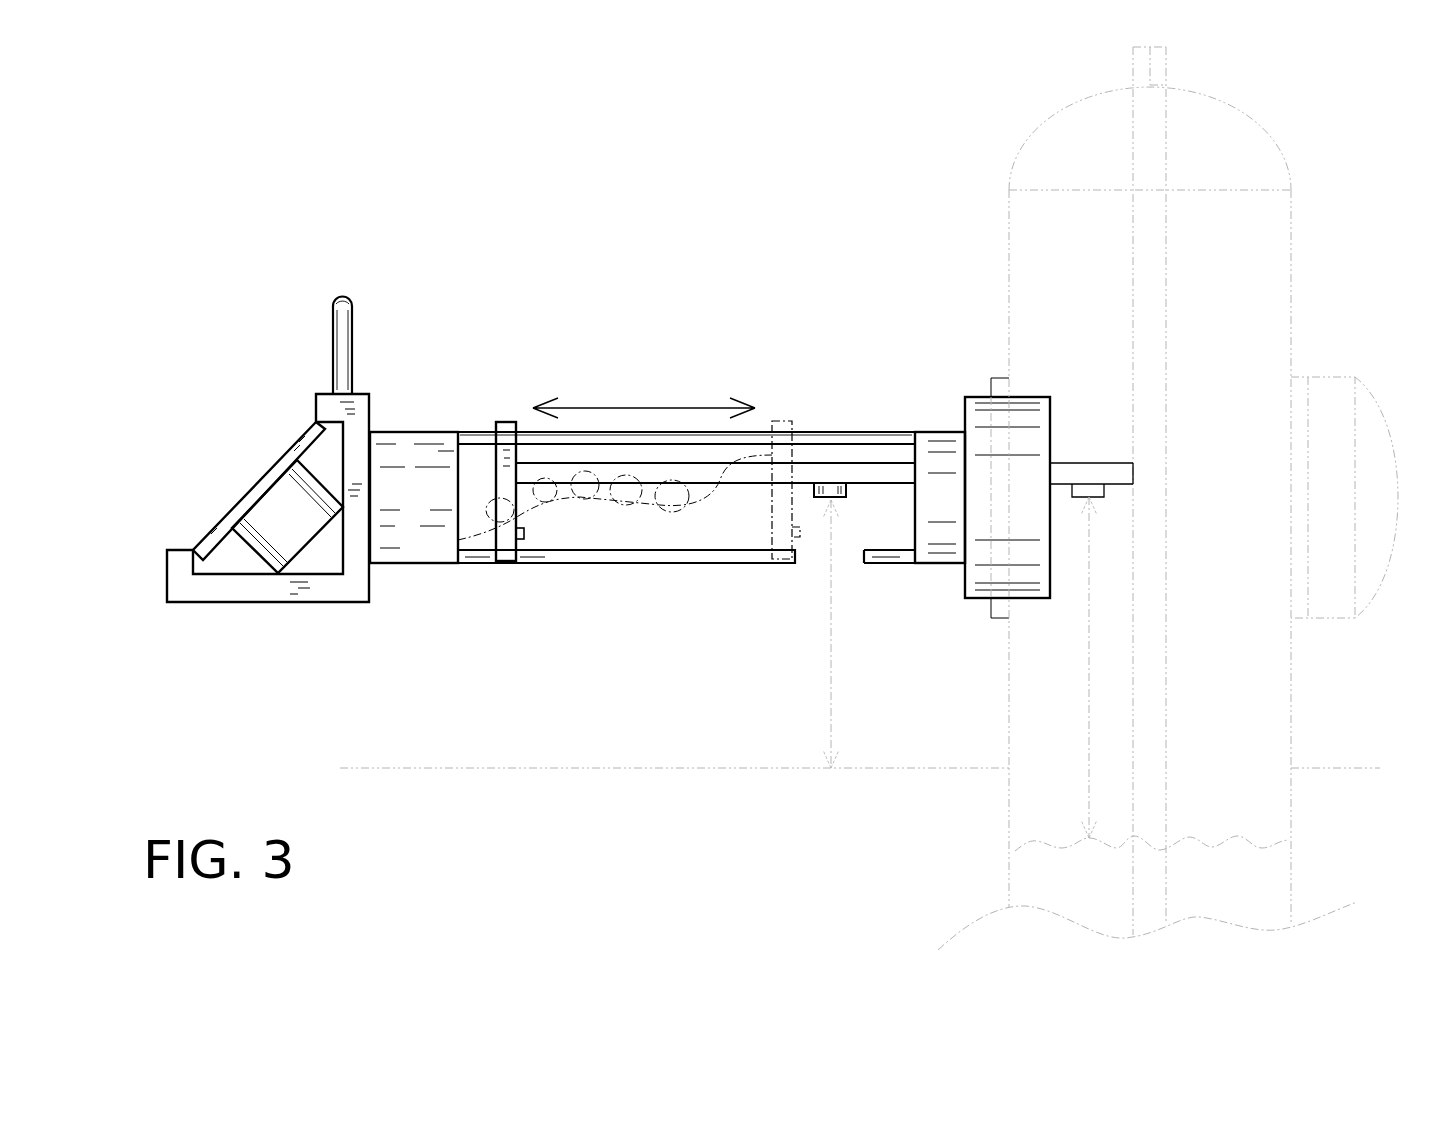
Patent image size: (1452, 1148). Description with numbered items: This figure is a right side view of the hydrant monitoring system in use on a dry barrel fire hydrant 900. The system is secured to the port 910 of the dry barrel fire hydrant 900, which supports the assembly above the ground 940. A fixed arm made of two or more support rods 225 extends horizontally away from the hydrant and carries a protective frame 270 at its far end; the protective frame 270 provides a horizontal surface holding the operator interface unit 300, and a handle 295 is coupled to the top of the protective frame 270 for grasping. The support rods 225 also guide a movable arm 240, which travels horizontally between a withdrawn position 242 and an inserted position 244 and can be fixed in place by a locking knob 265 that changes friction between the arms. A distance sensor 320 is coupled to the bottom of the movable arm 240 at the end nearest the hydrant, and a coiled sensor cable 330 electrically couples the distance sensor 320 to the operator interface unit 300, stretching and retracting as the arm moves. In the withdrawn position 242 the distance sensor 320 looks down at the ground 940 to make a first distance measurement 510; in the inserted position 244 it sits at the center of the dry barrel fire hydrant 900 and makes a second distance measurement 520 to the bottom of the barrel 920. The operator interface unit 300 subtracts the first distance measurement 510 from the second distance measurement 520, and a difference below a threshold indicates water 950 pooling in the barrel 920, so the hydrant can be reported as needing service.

The operator interface unit 300 is at (132, 480).
The handle 295 is at (342, 296).
The sensor cable 330 is at (460, 508).
The support rods 225 is at (598, 435).
The withdrawn position 242 is at (828, 468).
The distance sensor 320 is at (843, 495).
The port 910 is at (991, 378).
The dry barrel fire hydrant 900 is at (1270, 150).
The inserted position 244 is at (1095, 460).
The protective frame 270 is at (345, 593).
The movable arm 240 is at (500, 561).
The locking knob 265 is at (526, 534).
The first distance measurement 510 is at (832, 670).
The second distance measurement 520 is at (1090, 638).
The ground 940 is at (778, 767).
The water 950 is at (1073, 878).
The barrel 920 is at (1290, 821).